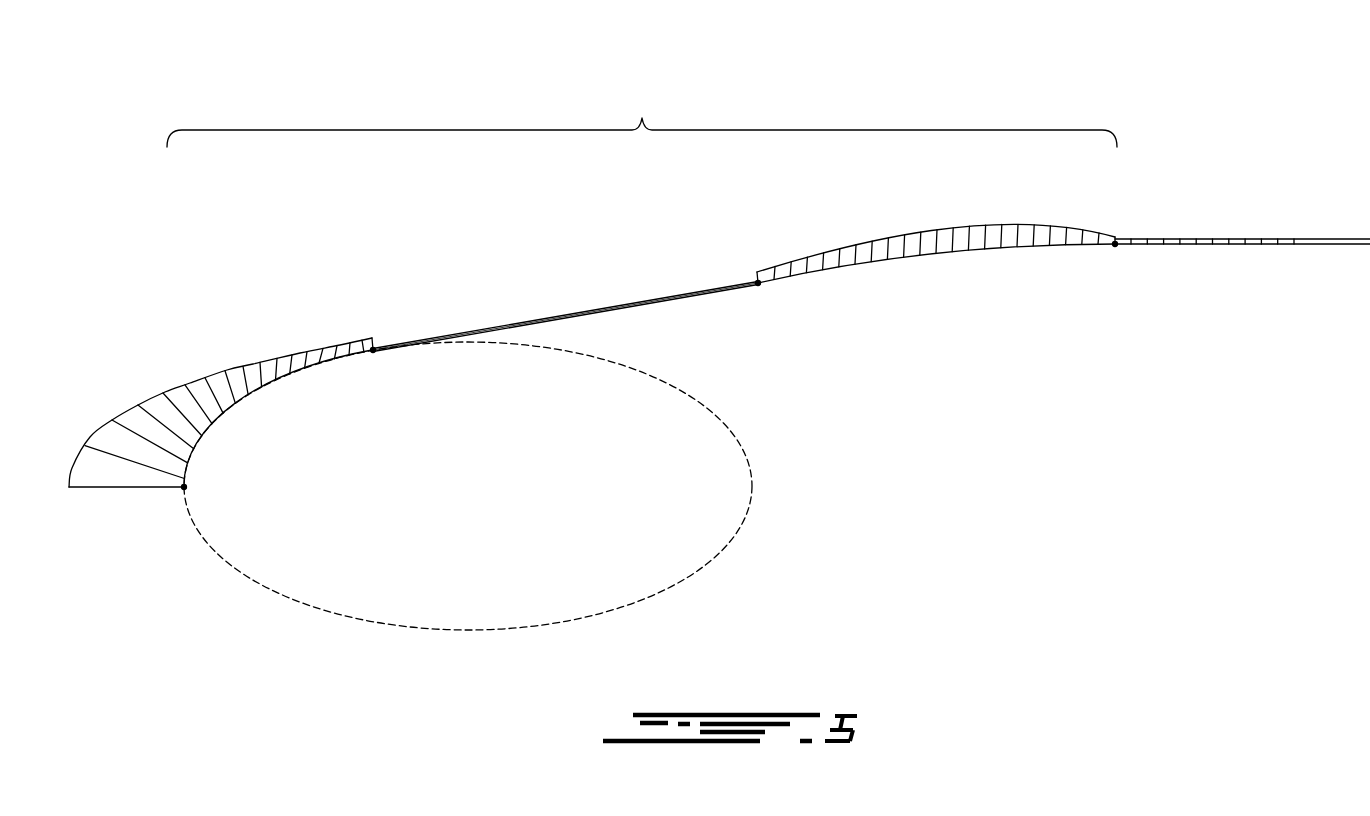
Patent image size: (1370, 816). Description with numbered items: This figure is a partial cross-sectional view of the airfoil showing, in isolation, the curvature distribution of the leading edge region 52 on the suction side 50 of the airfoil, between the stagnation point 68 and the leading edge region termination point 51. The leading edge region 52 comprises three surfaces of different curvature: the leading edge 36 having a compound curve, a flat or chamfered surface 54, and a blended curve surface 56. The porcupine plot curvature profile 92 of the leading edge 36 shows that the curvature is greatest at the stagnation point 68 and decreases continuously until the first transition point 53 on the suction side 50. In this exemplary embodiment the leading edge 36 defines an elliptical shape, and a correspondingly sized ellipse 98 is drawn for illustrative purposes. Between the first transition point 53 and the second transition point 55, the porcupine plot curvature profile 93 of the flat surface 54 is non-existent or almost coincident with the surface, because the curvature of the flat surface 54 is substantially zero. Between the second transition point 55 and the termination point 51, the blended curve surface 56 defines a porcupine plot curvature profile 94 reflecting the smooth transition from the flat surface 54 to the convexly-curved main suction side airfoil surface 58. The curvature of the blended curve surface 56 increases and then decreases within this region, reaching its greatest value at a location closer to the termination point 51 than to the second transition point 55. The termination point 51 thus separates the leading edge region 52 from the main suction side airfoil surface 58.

The suction side 50 is at (742, 259).
The leading edge region termination point 51 is at (1118, 240).
The leading edge region 52 is at (642, 116).
The first transition point 53 is at (378, 356).
The flat surface 54 is at (672, 300).
The second transition point 55 is at (760, 289).
The blended curve surface 56 is at (960, 258).
The main suction side airfoil surface 58 is at (1295, 240).
The stagnation point 68 is at (186, 487).
The leading edge 36 is at (270, 382).
The porcupine plot curvature profile 92 is at (152, 395).
The porcupine plot curvature profile 93 is at (563, 313).
The porcupine plot curvature profile 94 is at (970, 220).
The ellipse 98 is at (755, 483).